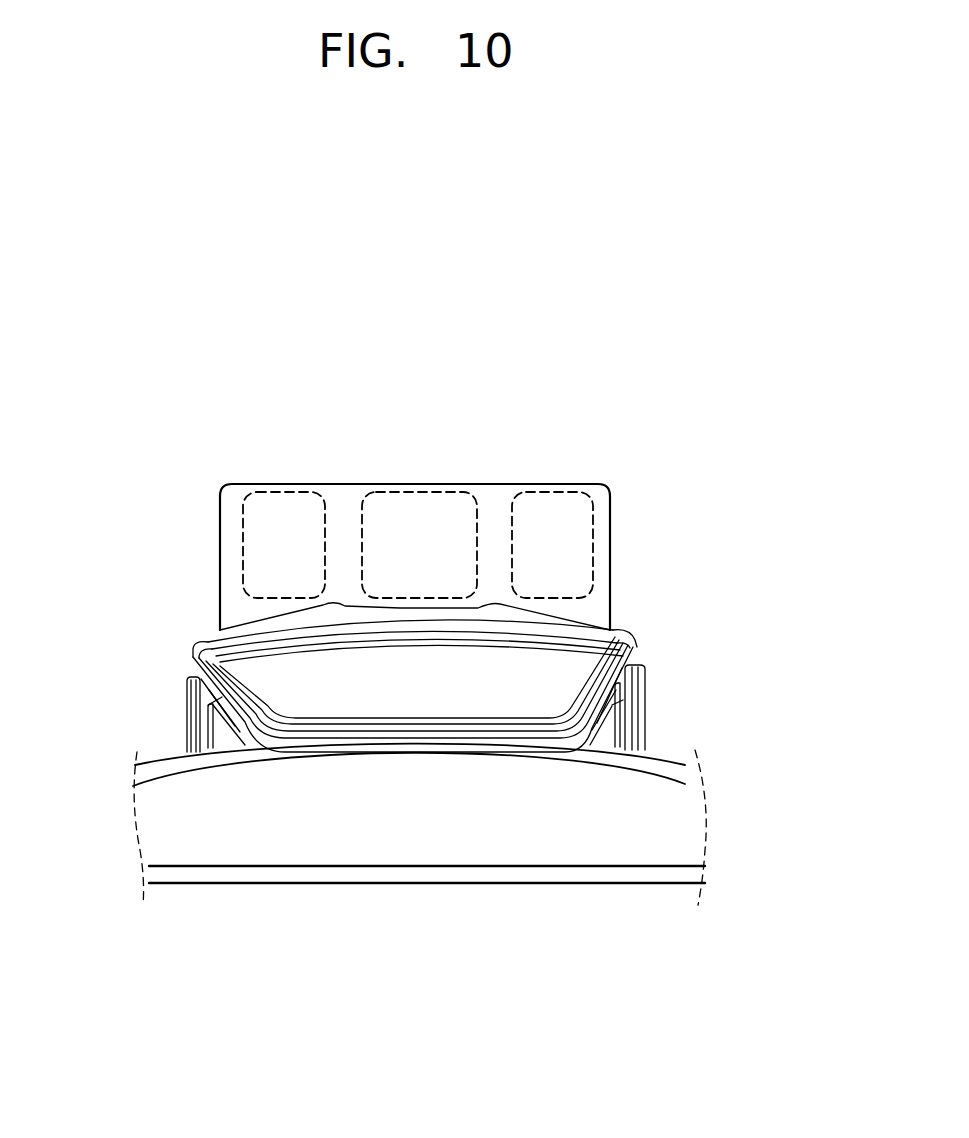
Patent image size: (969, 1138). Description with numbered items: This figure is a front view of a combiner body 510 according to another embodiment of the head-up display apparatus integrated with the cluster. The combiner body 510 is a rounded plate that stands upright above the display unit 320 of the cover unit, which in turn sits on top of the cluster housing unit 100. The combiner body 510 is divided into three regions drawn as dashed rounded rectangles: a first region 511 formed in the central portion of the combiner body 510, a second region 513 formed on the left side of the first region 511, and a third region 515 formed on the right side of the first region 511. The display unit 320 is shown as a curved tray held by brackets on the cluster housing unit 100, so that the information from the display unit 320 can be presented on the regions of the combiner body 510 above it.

The cluster housing unit 100 is at (663, 767).
The display unit 320 is at (527, 686).
The combiner body 510 is at (296, 372).
The first region 511 is at (418, 517).
The second region 513 is at (292, 507).
The third region 515 is at (545, 508).